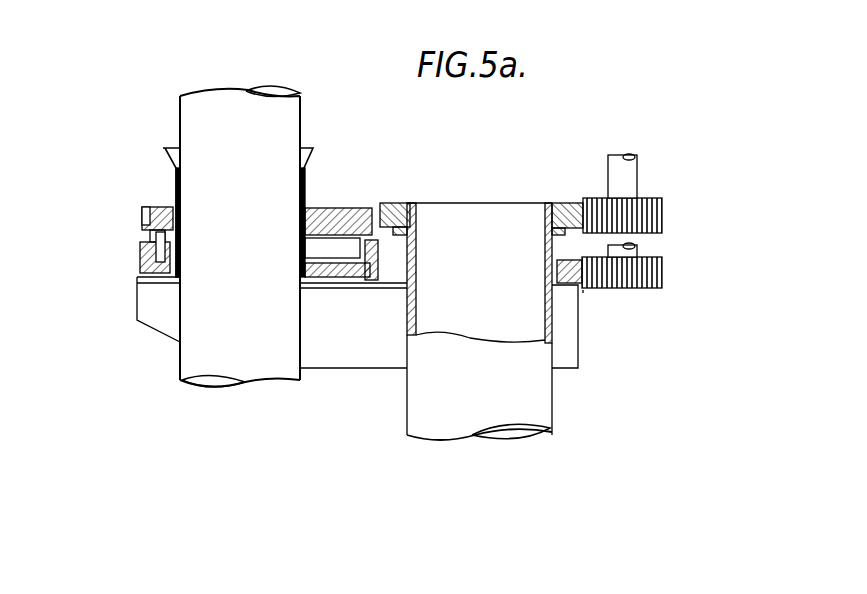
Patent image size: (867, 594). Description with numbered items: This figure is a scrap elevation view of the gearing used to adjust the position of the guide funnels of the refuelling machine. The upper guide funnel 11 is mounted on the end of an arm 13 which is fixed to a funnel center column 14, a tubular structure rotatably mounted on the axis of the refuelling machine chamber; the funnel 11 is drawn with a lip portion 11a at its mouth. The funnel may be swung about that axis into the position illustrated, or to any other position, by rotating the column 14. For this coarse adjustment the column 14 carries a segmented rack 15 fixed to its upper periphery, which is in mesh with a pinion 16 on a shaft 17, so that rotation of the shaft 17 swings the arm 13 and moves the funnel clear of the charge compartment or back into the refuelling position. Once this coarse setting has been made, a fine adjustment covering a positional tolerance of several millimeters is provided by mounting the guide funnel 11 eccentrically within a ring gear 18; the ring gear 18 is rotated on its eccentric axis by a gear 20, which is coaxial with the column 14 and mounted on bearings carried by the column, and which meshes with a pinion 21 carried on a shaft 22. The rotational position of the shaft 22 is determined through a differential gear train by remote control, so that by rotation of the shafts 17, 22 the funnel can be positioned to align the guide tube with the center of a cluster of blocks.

The upper guide funnel 11 is at (170, 168).
The sealing lip 11a is at (140, 222).
The arm 13 is at (365, 345).
The funnel center column 14 is at (490, 406).
The segmented rack 15 is at (583, 292).
The pinion 16 is at (662, 276).
The shaft 17 is at (610, 247).
The ring gear 18 is at (345, 210).
The gear 20 is at (393, 203).
The pinion 21 is at (662, 200).
The shaft 22 is at (636, 160).